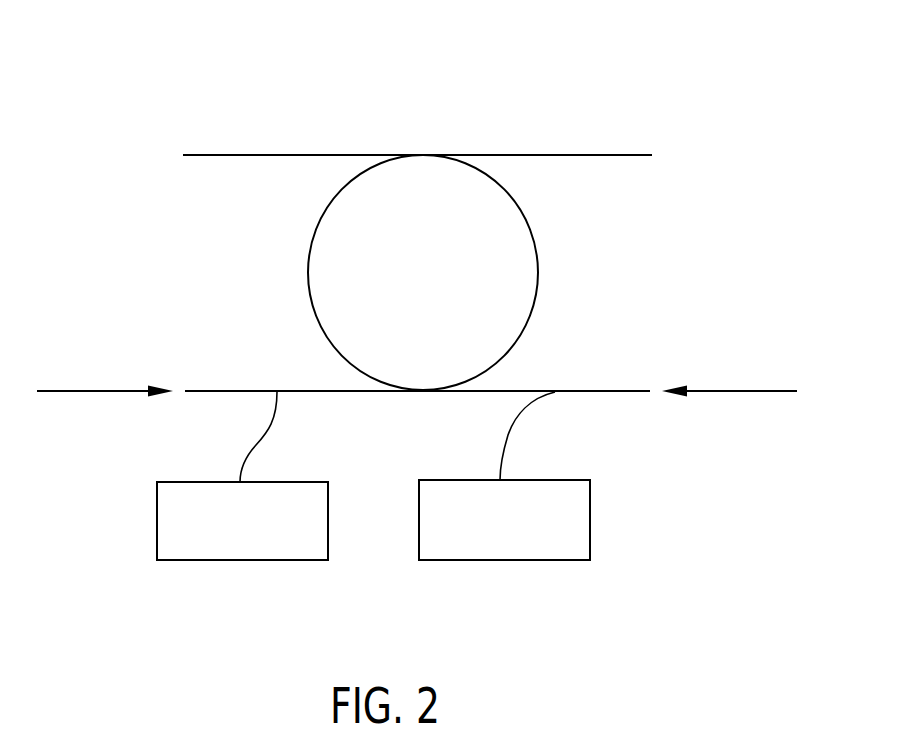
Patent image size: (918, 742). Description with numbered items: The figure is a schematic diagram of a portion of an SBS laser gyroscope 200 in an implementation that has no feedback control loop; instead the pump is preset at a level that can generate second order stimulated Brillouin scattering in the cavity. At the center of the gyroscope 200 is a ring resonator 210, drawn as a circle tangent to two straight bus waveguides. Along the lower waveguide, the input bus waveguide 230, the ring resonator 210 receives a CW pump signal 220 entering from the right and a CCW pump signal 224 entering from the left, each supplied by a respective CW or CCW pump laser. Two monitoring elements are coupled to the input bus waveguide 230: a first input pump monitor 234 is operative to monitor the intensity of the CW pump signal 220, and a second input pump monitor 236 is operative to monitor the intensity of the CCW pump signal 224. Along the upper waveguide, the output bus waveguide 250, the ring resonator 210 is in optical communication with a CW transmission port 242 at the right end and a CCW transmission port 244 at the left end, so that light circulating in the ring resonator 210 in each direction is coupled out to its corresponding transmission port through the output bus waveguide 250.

The SBS laser gyroscope 200 is at (368, 96).
The ring resonator 210 is at (539, 272).
The CW pump signal 220 is at (730, 390).
The CCW pump signal 224 is at (93, 390).
The input bus waveguide 230 is at (385, 392).
The first input pump monitor 234 is at (590, 525).
The second input pump monitor 236 is at (240, 560).
The CW transmission port 242 is at (620, 153).
The CCW transmission port 244 is at (222, 153).
The output bus waveguide 250 is at (267, 158).